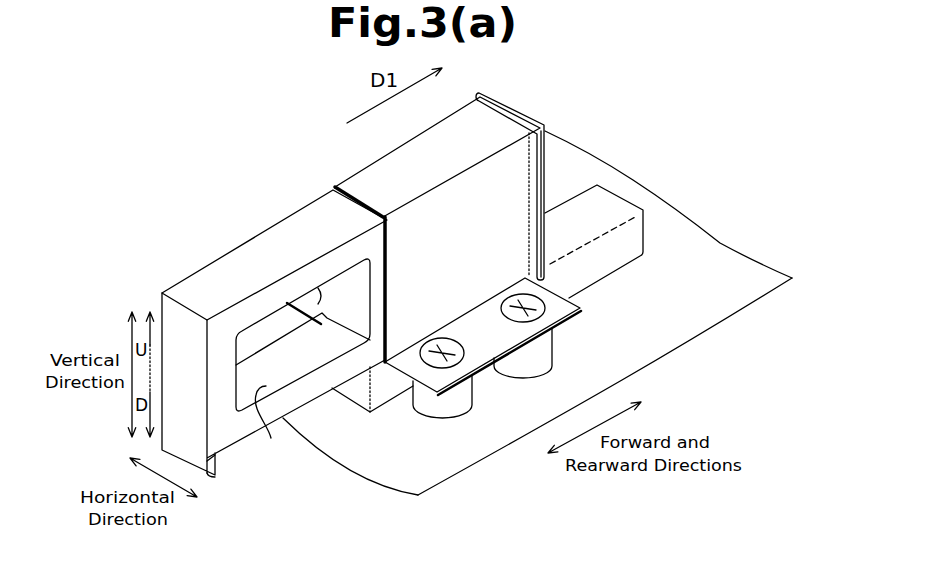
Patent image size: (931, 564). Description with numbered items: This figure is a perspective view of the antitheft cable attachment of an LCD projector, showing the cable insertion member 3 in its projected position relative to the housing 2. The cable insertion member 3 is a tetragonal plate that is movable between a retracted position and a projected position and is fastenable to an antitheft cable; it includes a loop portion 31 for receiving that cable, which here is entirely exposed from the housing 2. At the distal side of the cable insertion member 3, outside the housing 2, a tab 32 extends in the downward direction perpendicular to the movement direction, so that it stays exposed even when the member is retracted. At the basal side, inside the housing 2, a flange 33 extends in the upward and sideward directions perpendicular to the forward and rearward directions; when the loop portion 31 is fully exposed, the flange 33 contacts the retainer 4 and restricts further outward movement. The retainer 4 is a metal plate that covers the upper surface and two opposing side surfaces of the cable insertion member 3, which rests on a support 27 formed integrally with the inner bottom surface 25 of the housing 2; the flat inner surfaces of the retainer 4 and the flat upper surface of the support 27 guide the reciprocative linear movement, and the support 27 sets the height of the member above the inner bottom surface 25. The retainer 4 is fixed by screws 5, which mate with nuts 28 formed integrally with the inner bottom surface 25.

The housing 2 is at (744, 326).
The inner bottom surface 25 is at (717, 244).
The cable insertion member 3 is at (268, 229).
The loop portion 31 is at (271, 424).
The tab 32 is at (228, 467).
The retainer 4 is at (363, 168).
The flange 33 is at (508, 89).
The screws 5 is at (460, 345).
The nuts 28 is at (543, 347).
The support 27 is at (608, 181).